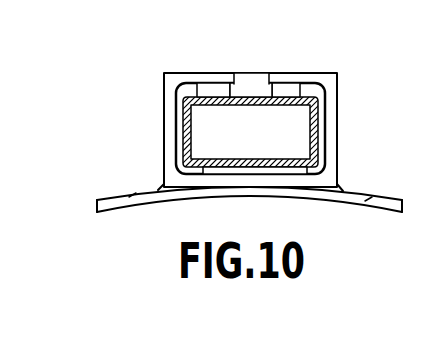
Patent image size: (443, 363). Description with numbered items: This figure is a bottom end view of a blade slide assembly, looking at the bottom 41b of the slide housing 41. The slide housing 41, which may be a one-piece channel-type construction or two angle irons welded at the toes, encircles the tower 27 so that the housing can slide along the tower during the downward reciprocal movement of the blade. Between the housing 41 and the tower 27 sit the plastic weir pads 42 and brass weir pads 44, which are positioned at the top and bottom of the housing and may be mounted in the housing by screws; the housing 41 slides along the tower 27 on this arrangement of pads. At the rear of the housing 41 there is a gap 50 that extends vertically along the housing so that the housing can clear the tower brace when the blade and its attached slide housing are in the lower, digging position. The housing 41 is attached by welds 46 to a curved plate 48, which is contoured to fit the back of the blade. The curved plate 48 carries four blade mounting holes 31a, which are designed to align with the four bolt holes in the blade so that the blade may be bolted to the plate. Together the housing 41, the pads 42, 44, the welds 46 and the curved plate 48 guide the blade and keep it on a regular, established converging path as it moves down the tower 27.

The tower 27 is at (285, 106).
The blade mounting holes 31a is at (130, 192).
The slide housing 41 is at (163, 98).
The bottom of slide housing 41b is at (426, 11).
The plastic weir pads 42 is at (250, 175).
The brass weir pads 44 is at (212, 90).
The welds 46 is at (163, 187).
The curved plate 48 is at (163, 213).
The gap 50 is at (247, 0).